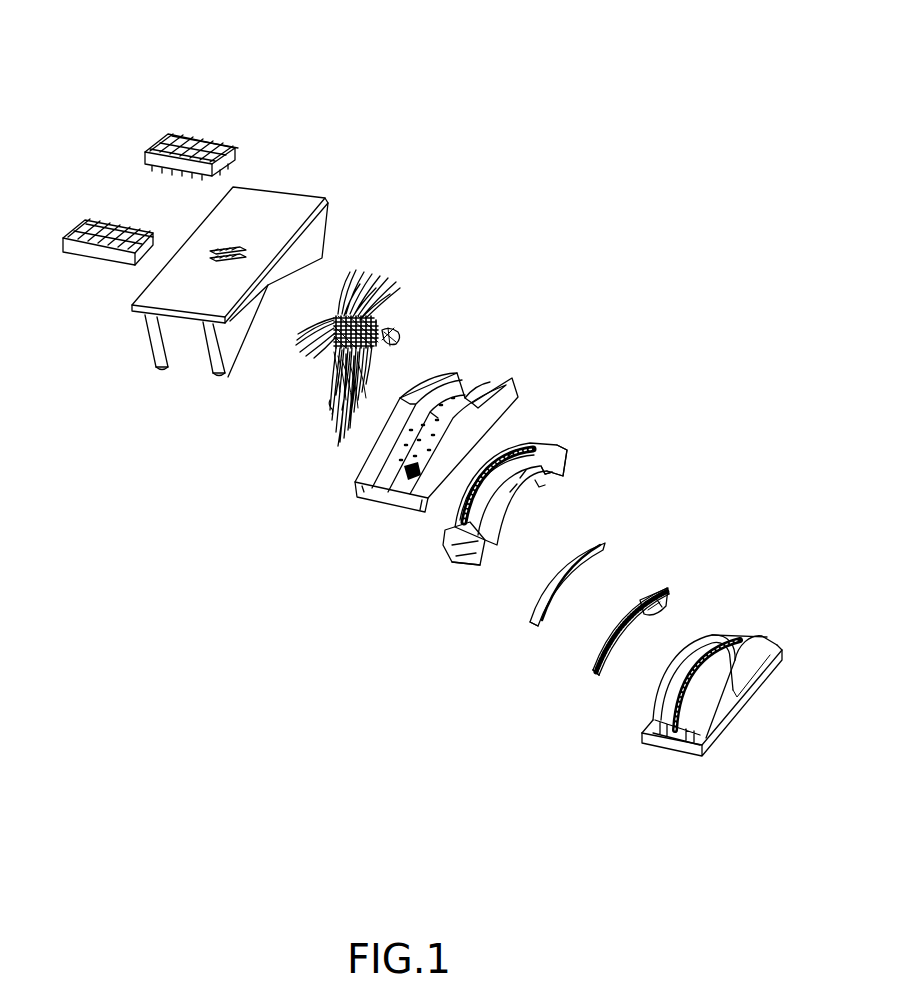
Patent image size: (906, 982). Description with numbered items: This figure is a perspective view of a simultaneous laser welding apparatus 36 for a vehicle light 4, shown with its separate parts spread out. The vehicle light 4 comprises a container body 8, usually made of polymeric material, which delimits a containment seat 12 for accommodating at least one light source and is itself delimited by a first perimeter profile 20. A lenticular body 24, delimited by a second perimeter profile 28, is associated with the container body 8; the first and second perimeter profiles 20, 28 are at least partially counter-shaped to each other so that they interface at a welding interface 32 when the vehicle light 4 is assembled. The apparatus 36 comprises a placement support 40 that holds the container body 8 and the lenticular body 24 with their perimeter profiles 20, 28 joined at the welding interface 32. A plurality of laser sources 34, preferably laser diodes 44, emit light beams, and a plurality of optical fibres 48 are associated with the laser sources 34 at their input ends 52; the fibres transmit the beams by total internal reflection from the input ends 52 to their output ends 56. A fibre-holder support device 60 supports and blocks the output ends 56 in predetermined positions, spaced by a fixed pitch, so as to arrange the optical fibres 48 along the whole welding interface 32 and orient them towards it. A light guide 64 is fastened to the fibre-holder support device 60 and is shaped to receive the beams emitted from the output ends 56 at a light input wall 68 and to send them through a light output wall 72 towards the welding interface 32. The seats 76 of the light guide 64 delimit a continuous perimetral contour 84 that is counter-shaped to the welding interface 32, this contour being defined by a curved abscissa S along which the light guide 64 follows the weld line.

The vehicle light 4 is at (662, 556).
The container body 8 is at (670, 603).
The containment seat 12 is at (652, 586).
The first perimeter profile 20 is at (594, 668).
The lenticular body 24 is at (537, 617).
The second perimeter profile 28 is at (539, 628).
The welding interface 32 is at (561, 732).
The laser sources 34 is at (156, 190).
The simultaneous laser welding apparatus 36 is at (452, 224).
The placement support 40 is at (713, 705).
The laser diodes 44 is at (196, 126).
The optical fibres 48 is at (396, 300).
The input ends 52 is at (352, 276).
The output ends 56 is at (396, 356).
The fibre-holder support device 60 is at (517, 393).
The light guide 64 is at (565, 466).
The light input wall 68 is at (530, 444).
The light output wall 72 is at (549, 484).
The seats 76 is at (376, 563).
The perimetral contour 84 is at (453, 521).
The curved abscissa S is at (546, 452).